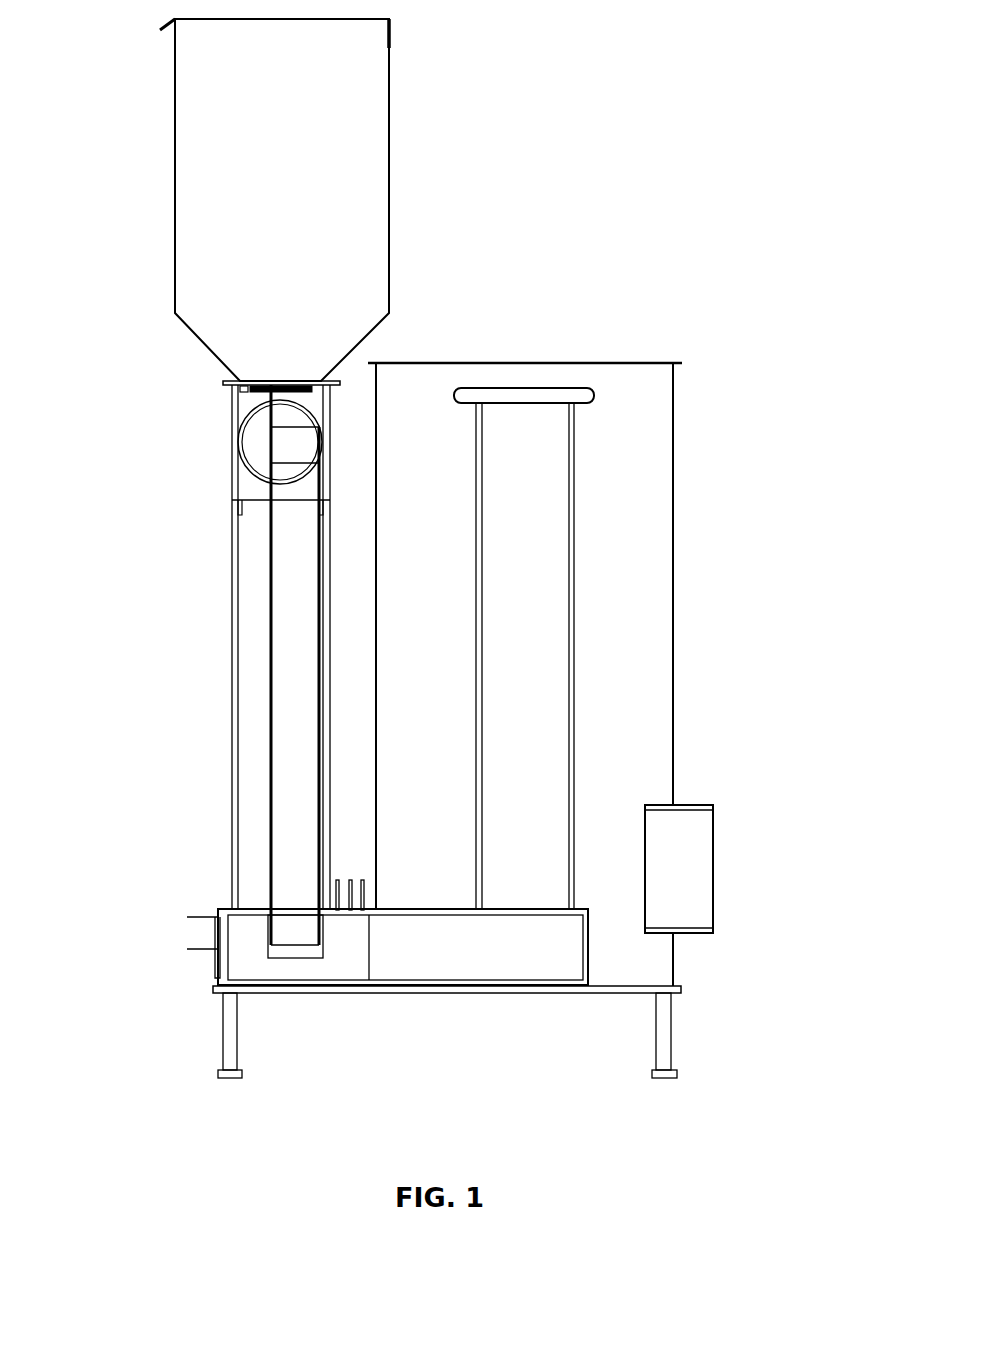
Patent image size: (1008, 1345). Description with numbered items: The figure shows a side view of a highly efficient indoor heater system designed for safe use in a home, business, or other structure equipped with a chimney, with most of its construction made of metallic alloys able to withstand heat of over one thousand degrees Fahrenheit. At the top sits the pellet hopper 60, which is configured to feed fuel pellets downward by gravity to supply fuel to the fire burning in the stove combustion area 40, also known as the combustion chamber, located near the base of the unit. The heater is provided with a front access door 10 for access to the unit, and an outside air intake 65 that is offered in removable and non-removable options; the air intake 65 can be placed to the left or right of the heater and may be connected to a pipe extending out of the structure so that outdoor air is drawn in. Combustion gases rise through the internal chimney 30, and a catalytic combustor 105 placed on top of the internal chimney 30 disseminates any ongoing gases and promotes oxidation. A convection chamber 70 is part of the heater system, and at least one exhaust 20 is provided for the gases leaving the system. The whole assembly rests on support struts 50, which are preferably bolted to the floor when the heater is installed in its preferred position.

The front access door 10 is at (210, 934).
The exhaust 20 is at (695, 849).
The internal chimney 30 is at (540, 516).
The stove combustion area 40 is at (348, 955).
The support struts 50 is at (230, 1072).
The pellet hopper 60 is at (289, 212).
The outside air intake 65 is at (259, 440).
The convection chamber 70 is at (640, 653).
The catalytic combustor 105 is at (543, 397).